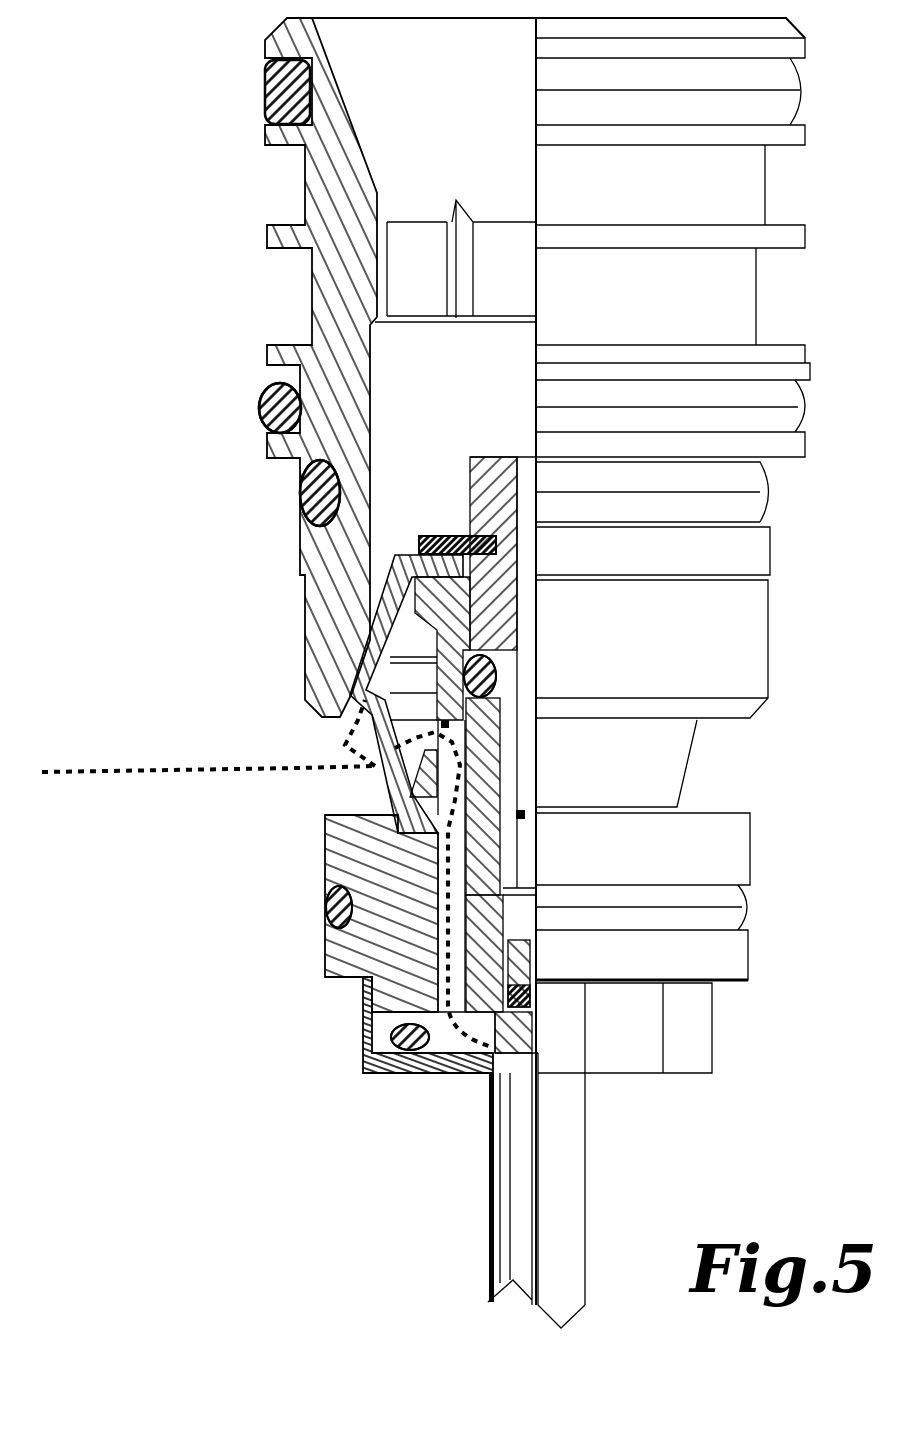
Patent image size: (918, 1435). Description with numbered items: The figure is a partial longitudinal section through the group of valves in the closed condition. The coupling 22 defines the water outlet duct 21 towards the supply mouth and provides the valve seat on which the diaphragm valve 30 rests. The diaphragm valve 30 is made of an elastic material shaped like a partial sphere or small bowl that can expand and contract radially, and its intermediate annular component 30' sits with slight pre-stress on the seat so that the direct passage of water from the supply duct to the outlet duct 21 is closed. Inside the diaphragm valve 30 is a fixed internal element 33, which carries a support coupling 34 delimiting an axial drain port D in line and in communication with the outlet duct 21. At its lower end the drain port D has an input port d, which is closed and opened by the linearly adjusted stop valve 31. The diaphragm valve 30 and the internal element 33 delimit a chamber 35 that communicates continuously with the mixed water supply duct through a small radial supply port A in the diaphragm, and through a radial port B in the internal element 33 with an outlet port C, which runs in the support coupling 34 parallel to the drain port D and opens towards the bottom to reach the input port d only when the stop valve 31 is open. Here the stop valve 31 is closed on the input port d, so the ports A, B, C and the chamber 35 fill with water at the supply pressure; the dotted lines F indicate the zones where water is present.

The coupling 22 is at (330, 270).
The water outlet duct 21 is at (395, 375).
The diaphragm valve 30 is at (363, 676).
The internal element 33 is at (390, 605).
The intermediate annular component 30' is at (318, 673).
The chamber 35 is at (415, 652).
The support coupling 34 is at (360, 1042).
The stop valve 31 is at (513, 1190).
The radial supply port A is at (395, 783).
The radial port B is at (445, 725).
The outlet port C is at (517, 814).
The axial drain port D is at (365, 1003).
The dotted lines indicating zones with water F is at (267, 873).
The input port d is at (538, 1052).